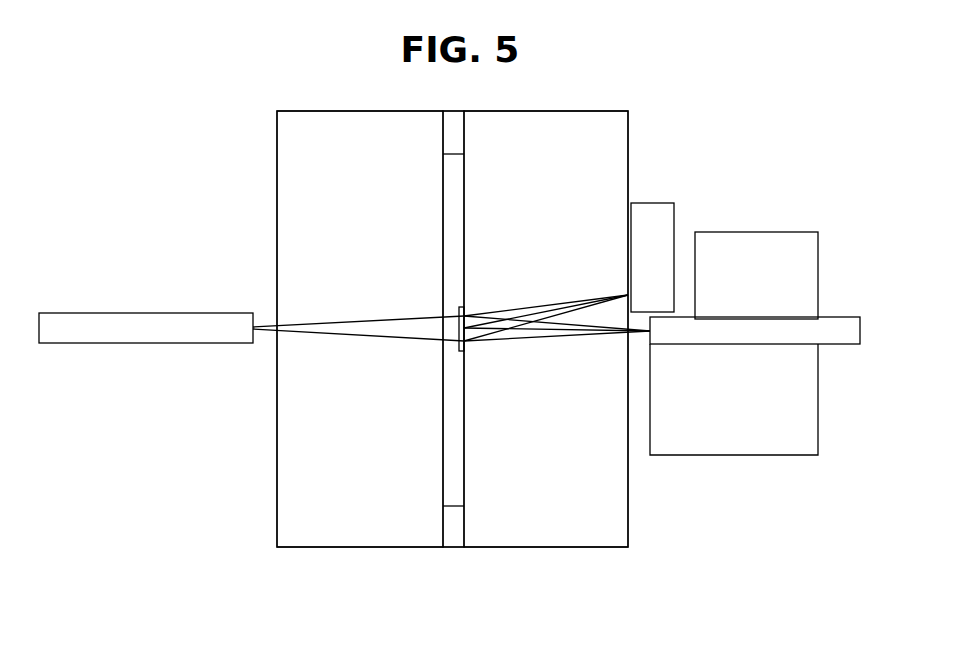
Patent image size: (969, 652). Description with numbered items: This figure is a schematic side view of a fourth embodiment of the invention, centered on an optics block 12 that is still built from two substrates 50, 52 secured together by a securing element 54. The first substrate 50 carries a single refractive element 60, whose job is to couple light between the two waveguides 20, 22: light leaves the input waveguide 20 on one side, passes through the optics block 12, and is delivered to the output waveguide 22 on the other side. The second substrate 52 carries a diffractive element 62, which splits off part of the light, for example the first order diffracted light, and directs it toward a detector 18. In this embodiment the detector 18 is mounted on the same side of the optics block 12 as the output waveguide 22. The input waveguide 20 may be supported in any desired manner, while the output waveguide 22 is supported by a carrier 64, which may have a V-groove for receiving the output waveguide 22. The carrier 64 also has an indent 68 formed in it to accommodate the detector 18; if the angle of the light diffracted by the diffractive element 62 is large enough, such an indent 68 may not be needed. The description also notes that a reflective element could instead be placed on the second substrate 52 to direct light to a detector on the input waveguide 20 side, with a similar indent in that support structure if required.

The optics block 12 is at (348, 93).
The detector 18 is at (662, 198).
The input waveguide 20 is at (119, 303).
The output waveguide 22 is at (850, 316).
The first substrate 50 is at (420, 514).
The second substrate 52 is at (486, 517).
The securing element 54 is at (458, 111).
The refractive element 60 is at (453, 320).
The diffractive element 62 is at (457, 352).
The carrier 64 is at (749, 470).
The indent 68 is at (683, 245).